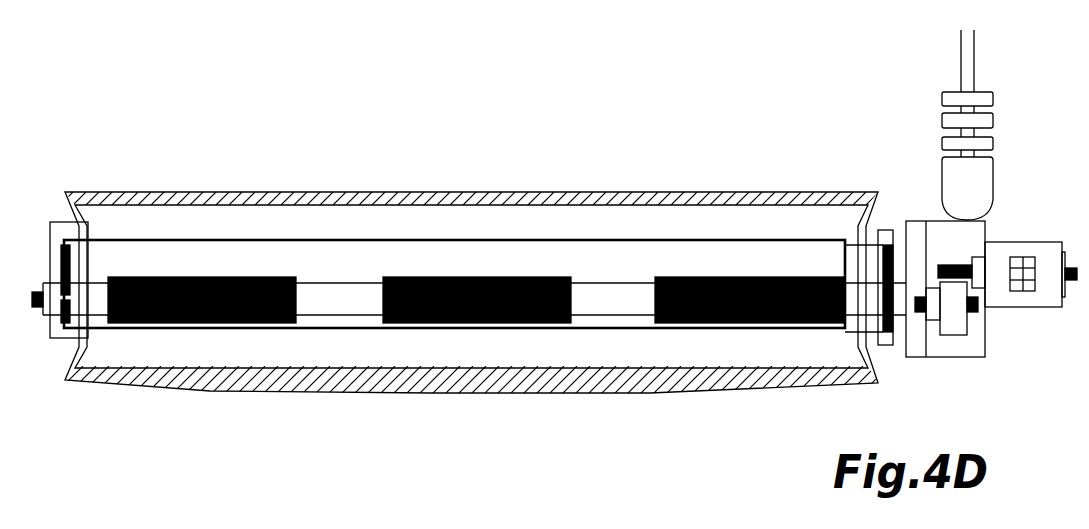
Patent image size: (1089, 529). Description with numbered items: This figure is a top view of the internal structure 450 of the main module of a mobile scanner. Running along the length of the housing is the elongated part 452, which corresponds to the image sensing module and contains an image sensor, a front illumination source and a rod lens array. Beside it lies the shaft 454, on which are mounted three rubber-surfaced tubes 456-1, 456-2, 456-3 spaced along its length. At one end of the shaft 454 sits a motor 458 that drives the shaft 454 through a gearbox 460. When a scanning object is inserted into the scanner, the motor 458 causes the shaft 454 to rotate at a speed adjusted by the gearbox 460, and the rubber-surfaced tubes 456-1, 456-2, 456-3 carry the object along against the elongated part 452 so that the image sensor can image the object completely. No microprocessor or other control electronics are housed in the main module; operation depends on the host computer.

The catheter assembly 450 is at (456, 170).
The elongated part 452 is at (333, 257).
The shaft 454 is at (327, 312).
The rubber-surfaced tube 456-1 is at (160, 323).
The rubber-surfaced tube 456-2 is at (493, 325).
The rubber-surfaced tube 456-3 is at (699, 325).
The motor 458 is at (1000, 278).
The gearbox 460 is at (938, 352).